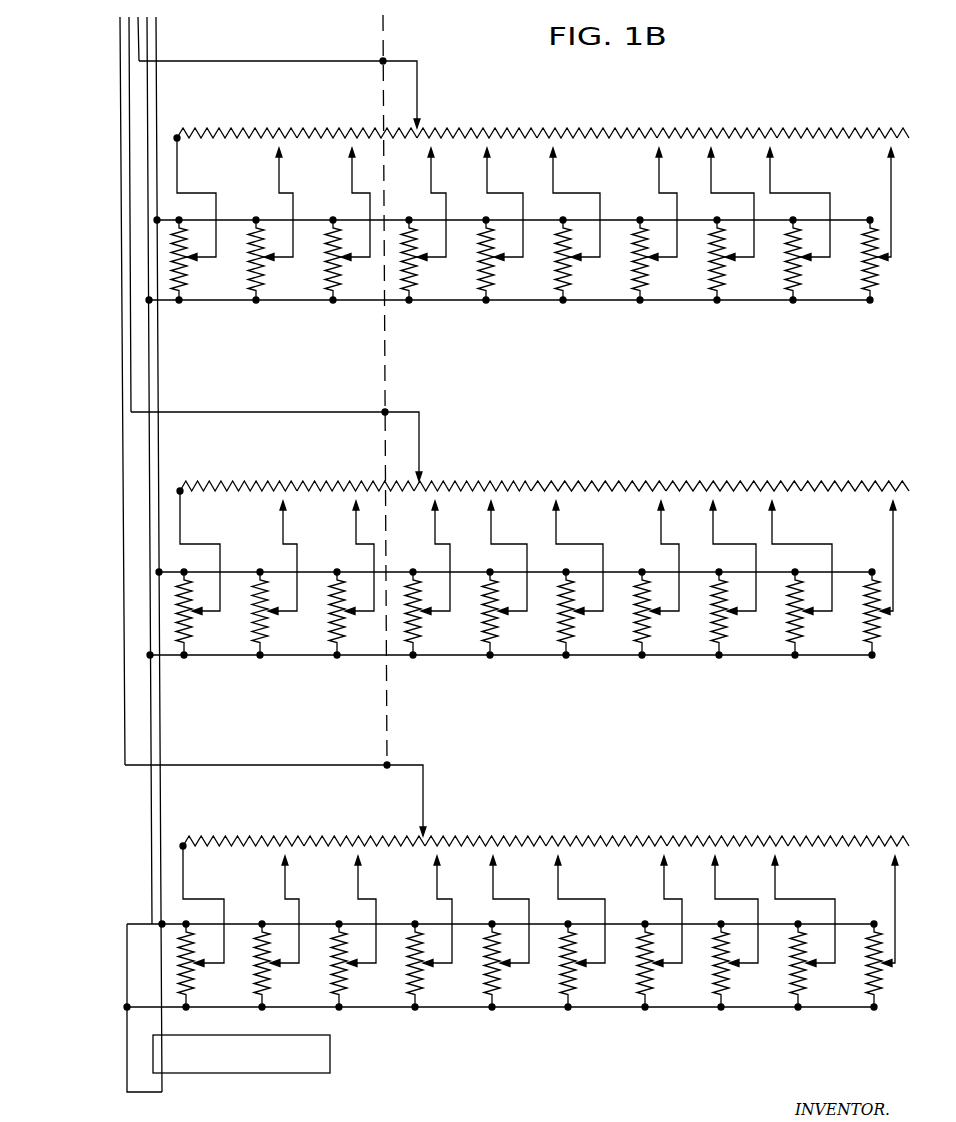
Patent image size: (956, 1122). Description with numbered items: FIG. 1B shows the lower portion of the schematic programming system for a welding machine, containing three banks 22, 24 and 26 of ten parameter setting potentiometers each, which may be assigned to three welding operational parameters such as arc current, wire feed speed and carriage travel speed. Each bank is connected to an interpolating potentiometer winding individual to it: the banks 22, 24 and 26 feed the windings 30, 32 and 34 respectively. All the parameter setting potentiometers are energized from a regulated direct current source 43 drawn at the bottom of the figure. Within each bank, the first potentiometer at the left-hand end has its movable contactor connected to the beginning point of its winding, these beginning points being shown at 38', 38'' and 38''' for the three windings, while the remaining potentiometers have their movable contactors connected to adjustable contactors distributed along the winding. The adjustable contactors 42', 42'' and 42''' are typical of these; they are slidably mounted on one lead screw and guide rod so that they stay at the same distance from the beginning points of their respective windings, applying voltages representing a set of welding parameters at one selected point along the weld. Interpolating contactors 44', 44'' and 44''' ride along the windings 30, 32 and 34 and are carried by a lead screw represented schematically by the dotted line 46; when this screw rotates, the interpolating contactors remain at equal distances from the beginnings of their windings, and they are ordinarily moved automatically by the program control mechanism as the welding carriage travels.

The bank of potentiometers 22 is at (541, 287).
The bank of potentiometers 24 is at (543, 643).
The bank of potentiometers 26 is at (544, 992).
The interpolating potentiometer winding 30 is at (605, 130).
The interpolating potentiometer winding 32 is at (593, 482).
The interpolating potentiometer winding 34 is at (583, 838).
The beginning point of interpolating winding 38' is at (193, 183).
The beginning point of interpolating winding 38'' is at (197, 529).
The beginning point of interpolating winding 38''' is at (199, 879).
The adjustable contactor 42' is at (345, 204).
The adjustable contactor 42'' is at (342, 558).
The adjustable contactor 42''' is at (385, 911).
The interpolating contactor 44' is at (306, 92).
The interpolating contactor 44'' is at (302, 445).
The interpolating contactor 44''' is at (305, 799).
The lead screw 46 is at (386, 36).
The regulated direct current source 43 is at (217, 1074).